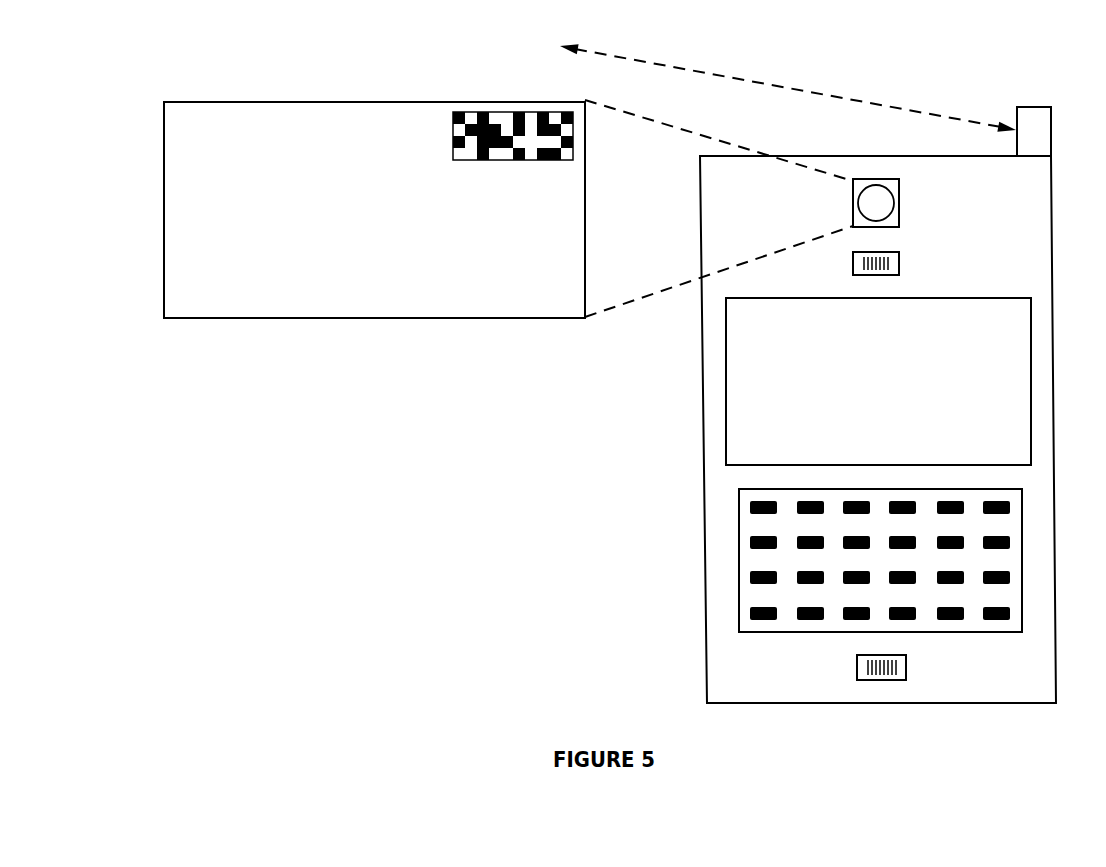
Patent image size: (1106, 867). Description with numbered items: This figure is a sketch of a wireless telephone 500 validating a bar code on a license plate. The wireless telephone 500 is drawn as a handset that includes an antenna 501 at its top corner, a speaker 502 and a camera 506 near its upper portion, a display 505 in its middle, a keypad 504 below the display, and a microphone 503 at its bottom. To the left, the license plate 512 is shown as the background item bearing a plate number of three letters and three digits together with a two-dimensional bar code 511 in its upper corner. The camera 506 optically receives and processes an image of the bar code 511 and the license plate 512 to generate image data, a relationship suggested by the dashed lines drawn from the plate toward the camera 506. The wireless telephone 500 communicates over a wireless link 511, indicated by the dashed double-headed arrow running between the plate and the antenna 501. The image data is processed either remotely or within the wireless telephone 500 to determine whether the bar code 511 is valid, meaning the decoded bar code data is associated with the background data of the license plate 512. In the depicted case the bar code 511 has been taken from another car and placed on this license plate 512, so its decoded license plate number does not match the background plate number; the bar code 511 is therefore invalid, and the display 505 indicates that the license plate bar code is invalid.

The wireless telephone 500 is at (1036, 40).
The antenna 501 is at (1047, 107).
The speaker 502 is at (900, 268).
The microphone 503 is at (907, 672).
The keypad 504 is at (797, 634).
The display 505 is at (1022, 298).
The camera 506 is at (900, 205).
The two-dimensional bar code 511 is at (453, 142).
The license plate 512 is at (374, 210).